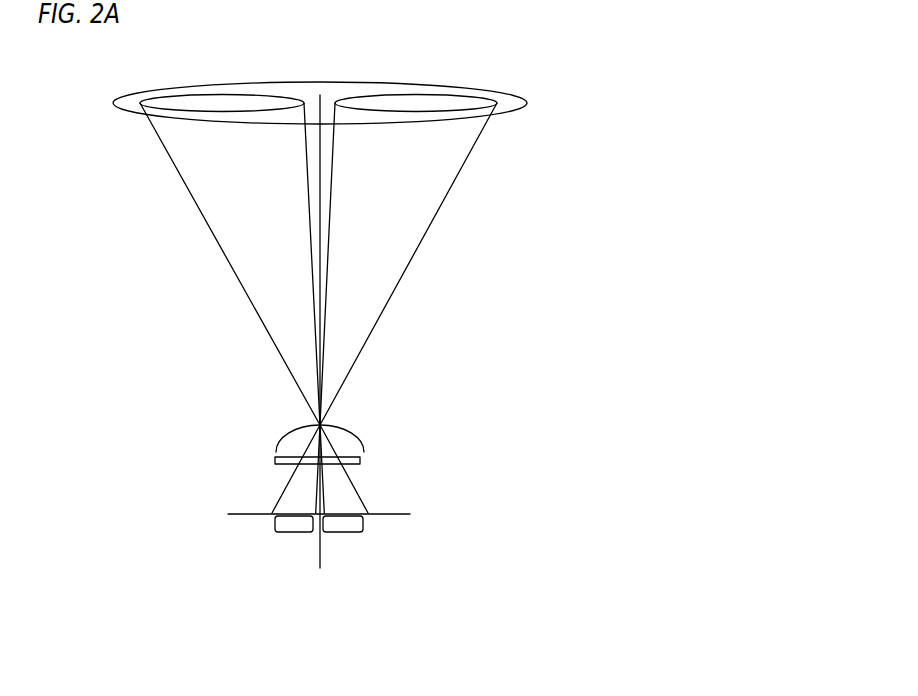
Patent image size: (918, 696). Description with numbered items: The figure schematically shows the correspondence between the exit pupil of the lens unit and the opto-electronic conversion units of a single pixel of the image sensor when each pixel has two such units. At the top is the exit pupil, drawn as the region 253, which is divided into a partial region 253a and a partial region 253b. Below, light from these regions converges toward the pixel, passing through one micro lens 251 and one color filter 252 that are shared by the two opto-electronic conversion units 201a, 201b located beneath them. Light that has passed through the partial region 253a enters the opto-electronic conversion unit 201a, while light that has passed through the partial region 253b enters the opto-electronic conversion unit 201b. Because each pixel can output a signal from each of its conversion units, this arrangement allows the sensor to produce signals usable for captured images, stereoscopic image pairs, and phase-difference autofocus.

The exit pupil region 253 is at (504, 95).
The partial region 253a is at (432, 93).
The partial region 253b is at (248, 94).
The micro lens 251 is at (351, 438).
The color filter 252 is at (362, 459).
The opto-electronic conversion unit 201a is at (295, 532).
The opto-electronic conversion unit 201b is at (349, 533).